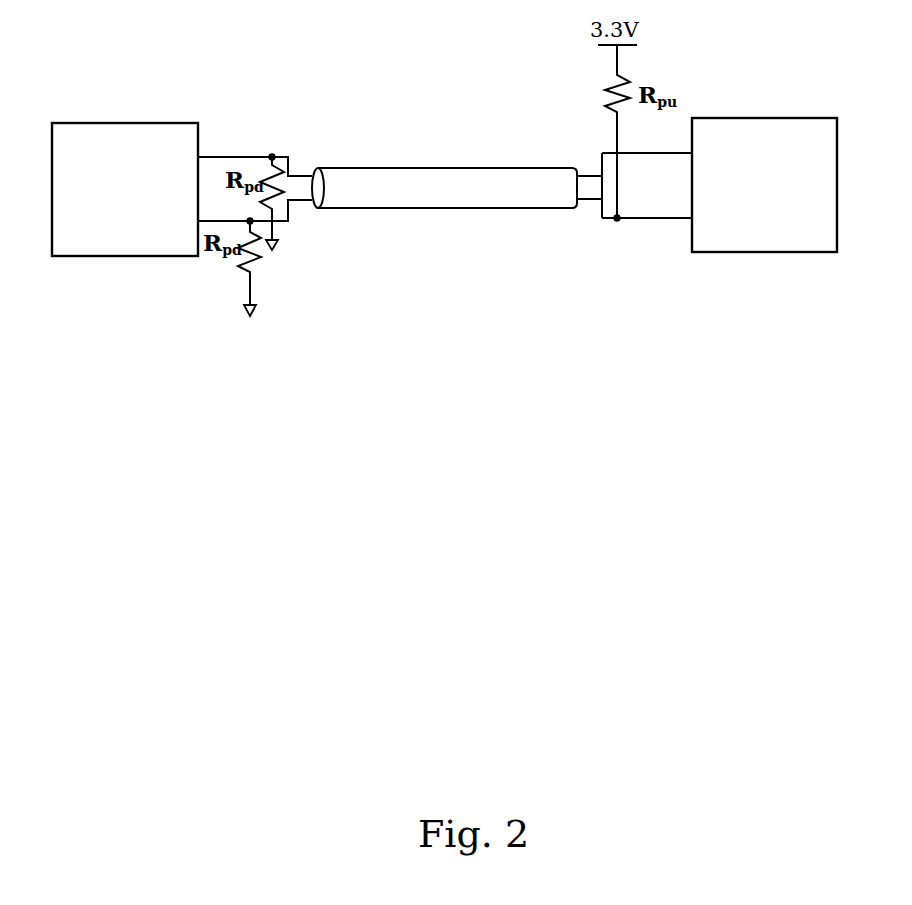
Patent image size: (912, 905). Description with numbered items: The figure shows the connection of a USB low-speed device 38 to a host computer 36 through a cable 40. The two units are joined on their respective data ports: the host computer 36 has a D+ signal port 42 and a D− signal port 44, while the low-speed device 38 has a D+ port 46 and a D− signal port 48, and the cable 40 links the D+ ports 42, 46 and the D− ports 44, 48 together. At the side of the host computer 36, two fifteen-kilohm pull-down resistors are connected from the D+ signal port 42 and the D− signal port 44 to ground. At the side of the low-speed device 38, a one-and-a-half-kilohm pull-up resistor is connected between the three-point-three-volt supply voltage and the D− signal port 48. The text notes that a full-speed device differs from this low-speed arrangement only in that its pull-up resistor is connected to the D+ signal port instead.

The host computer 36 is at (128, 123).
The USB low-speed device 38 is at (752, 118).
The cable 40 is at (450, 168).
The D+ signal port 42 is at (245, 157).
The D− signal port 44 is at (283, 223).
The D+ port 46 is at (612, 153).
The D− signal port 48 is at (665, 220).